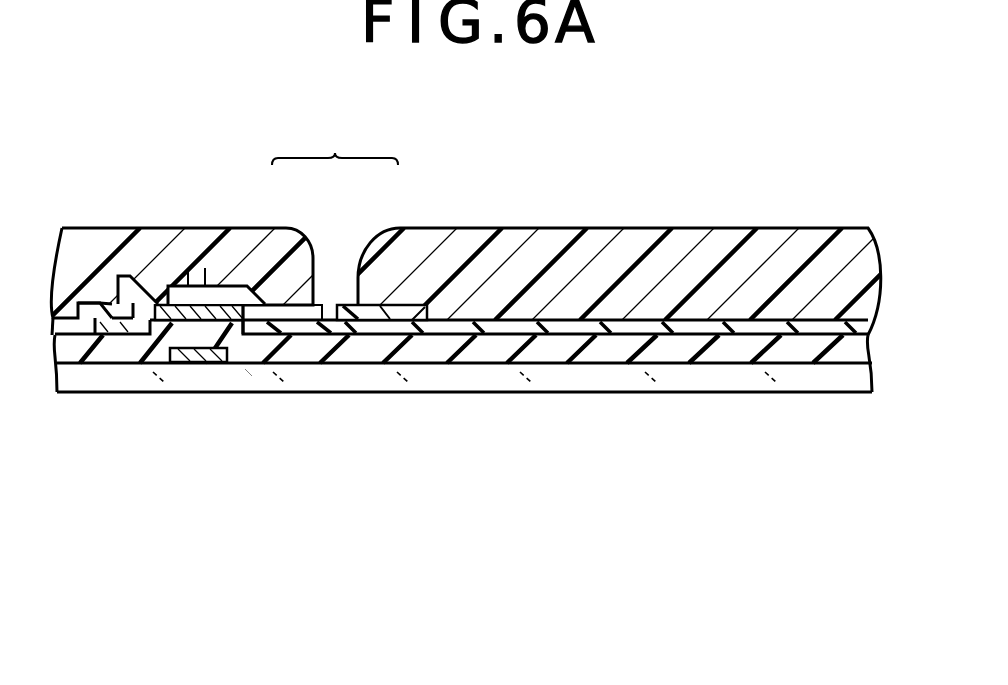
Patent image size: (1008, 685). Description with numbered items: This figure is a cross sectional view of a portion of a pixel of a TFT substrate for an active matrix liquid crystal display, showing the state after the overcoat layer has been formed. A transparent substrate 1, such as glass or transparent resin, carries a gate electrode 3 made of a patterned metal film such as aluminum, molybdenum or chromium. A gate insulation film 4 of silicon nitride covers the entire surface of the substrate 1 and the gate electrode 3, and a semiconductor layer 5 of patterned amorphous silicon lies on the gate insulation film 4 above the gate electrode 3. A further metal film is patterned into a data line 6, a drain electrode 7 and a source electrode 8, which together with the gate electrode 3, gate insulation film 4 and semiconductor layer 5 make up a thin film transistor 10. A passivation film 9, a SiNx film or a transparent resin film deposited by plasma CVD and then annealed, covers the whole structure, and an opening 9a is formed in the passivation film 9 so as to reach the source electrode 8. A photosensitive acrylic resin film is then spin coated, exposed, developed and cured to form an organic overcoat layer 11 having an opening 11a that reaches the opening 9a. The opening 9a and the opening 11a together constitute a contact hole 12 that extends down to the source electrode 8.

The substrate 1 is at (722, 377).
The gate electrode 3 is at (203, 362).
The gate insulation film 4 is at (641, 350).
The semiconductor layer 5 is at (187, 282).
The data line 6 is at (117, 340).
The drain electrode 7 is at (156, 292).
The source electrode 8 is at (328, 352).
The passivation film 9 is at (760, 325).
The opening 9a is at (328, 313).
The thin film transistor 10 is at (247, 370).
The overcoat layer 11 is at (590, 277).
The opening 11a is at (320, 312).
The contact hole 12 is at (335, 142).